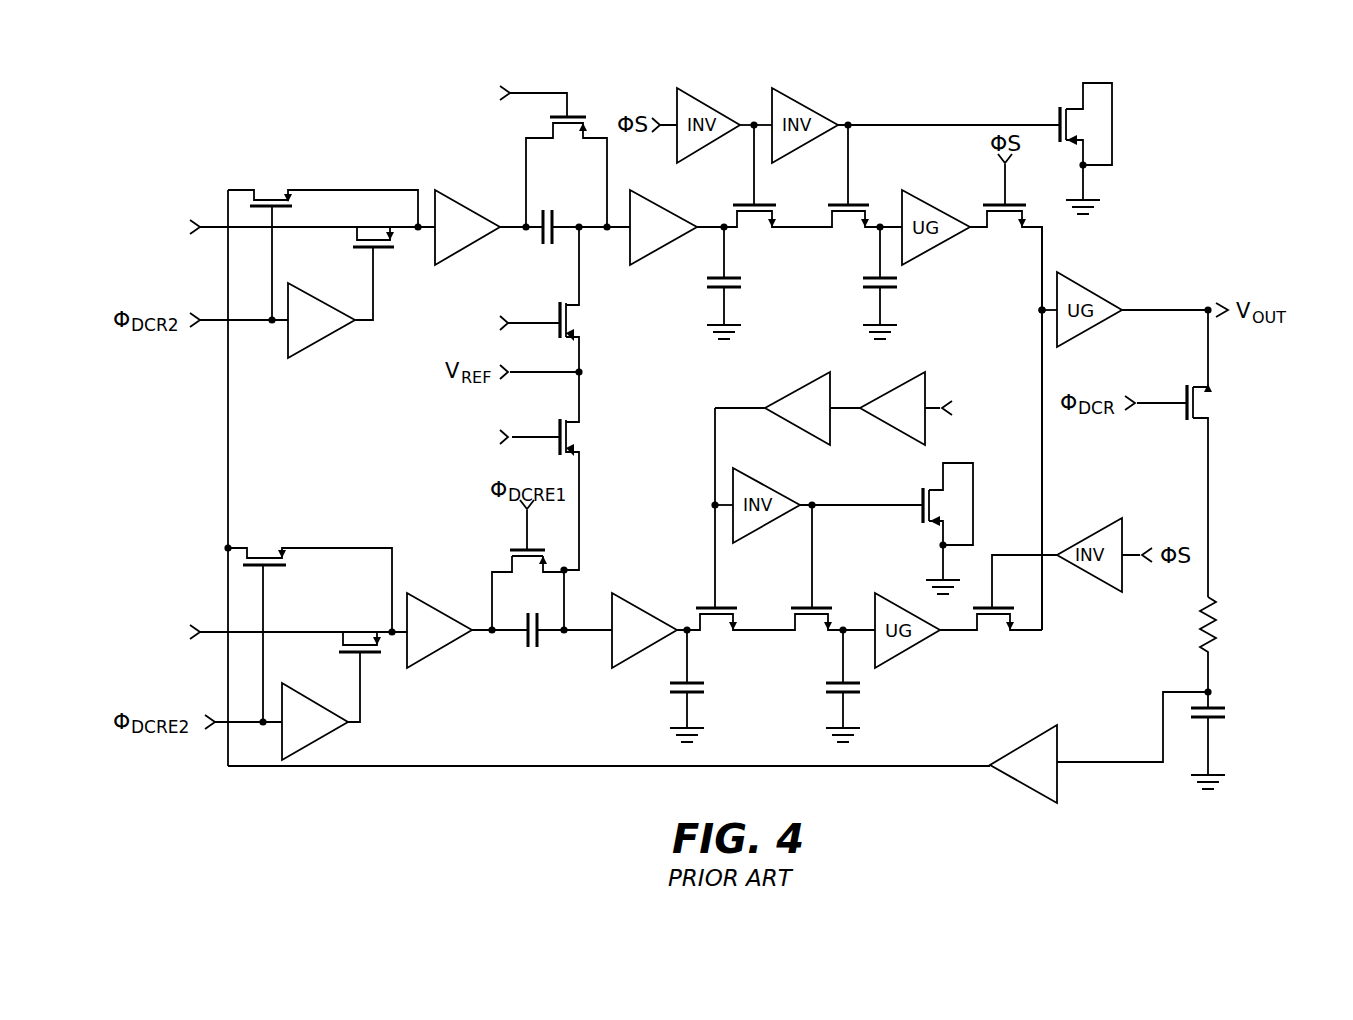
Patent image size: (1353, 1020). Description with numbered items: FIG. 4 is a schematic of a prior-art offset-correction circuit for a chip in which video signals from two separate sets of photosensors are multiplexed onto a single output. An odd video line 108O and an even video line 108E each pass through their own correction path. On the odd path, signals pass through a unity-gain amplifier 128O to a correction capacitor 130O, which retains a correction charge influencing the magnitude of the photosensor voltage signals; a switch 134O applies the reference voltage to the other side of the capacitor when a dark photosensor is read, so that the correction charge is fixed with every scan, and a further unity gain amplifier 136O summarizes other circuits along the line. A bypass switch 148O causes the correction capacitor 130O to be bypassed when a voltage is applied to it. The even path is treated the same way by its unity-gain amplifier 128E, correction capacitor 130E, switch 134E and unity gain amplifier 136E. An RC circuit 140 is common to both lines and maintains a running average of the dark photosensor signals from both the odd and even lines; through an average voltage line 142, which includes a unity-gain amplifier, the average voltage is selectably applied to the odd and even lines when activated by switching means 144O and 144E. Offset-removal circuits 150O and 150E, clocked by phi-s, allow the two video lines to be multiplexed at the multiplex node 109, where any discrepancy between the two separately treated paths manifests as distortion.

The odd video line 108O is at (216, 232).
The even video line 108E is at (218, 635).
The unity-gain amplifier 128O is at (468, 205).
The unity-gain amplifier 128E is at (440, 655).
The correction capacitor 130O is at (541, 240).
The correction capacitor 130E is at (522, 645).
The switch 134O is at (590, 318).
The switch 134E is at (590, 437).
The unity gain amplifier 136O is at (628, 252).
The unity gain amplifier 136E is at (609, 655).
The switching means 144O is at (315, 347).
The switching means 144E is at (318, 737).
The bypass switch 148O is at (580, 100).
The offset-removal circuit 150O is at (935, 125).
The offset-removal circuit 150E is at (935, 405).
The multiplex node 109 is at (1038, 311).
The RC circuit 140 is at (1178, 668).
The average voltage line 142 is at (875, 766).